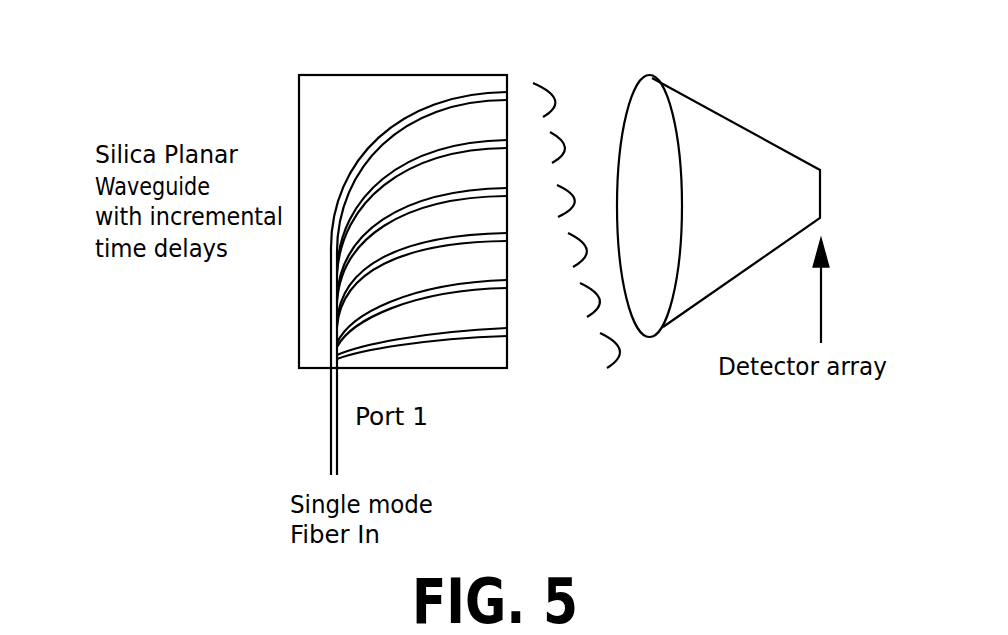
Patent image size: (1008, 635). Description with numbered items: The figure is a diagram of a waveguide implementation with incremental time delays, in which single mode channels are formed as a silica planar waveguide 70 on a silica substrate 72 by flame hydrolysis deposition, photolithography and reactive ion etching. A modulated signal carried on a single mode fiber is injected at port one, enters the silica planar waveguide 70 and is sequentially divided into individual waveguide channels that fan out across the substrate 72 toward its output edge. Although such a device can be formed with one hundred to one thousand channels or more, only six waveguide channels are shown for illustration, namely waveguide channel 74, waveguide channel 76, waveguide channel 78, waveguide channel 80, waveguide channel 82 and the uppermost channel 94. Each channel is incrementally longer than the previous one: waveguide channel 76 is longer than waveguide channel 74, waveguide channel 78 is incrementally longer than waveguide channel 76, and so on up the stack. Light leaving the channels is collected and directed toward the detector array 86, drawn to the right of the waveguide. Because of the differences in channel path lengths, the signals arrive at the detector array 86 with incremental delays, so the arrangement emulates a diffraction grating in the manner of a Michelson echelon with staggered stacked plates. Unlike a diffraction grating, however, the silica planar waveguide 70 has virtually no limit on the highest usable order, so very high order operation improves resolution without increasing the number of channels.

The silica planar waveguide 70 is at (261, 81).
The silica substrate 72 is at (333, 87).
The waveguide channel 74 is at (501, 338).
The waveguide channel 76 is at (502, 291).
The waveguide channel 78 is at (500, 243).
The waveguide channel 80 is at (500, 197).
The waveguide channel 82 is at (497, 145).
The sixth waveguide delay path 94 is at (451, 96).
The detector array 86 is at (713, 143).